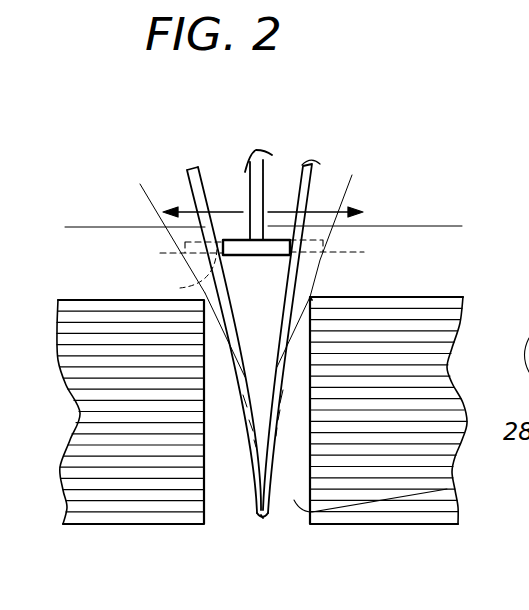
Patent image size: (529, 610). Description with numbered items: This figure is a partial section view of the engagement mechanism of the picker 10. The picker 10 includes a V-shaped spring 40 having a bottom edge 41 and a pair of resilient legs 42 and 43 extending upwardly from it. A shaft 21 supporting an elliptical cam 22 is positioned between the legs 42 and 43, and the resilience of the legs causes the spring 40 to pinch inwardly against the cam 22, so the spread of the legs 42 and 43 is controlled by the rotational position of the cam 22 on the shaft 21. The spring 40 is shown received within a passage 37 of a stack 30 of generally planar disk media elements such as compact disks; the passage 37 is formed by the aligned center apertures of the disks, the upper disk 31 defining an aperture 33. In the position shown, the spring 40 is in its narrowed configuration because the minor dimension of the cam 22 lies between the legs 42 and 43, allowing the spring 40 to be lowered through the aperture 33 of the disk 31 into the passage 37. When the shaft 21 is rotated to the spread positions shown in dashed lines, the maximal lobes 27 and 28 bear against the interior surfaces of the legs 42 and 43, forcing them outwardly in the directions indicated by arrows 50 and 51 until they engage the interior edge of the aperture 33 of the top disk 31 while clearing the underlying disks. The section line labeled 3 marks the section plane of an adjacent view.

The section line 3- 3 is at (417, 212).
The picker 10 is at (461, 146).
The shaft 21 is at (264, 186).
The elliptical cam 22 is at (200, 285).
The maximal lobe 27 is at (271, 257).
The maximal lobe 28 is at (183, 251).
The stack 30 is at (397, 525).
The upper disk 31 is at (405, 296).
The aperture 33 is at (312, 296).
The passage 37 is at (447, 489).
The V-shaped spring 40 is at (254, 481).
The bottom edge 41 is at (261, 519).
The resilient leg 42 is at (277, 367).
The resilient leg 43 is at (244, 378).
The arrow 50 is at (313, 214).
The arrow 51 is at (195, 206).